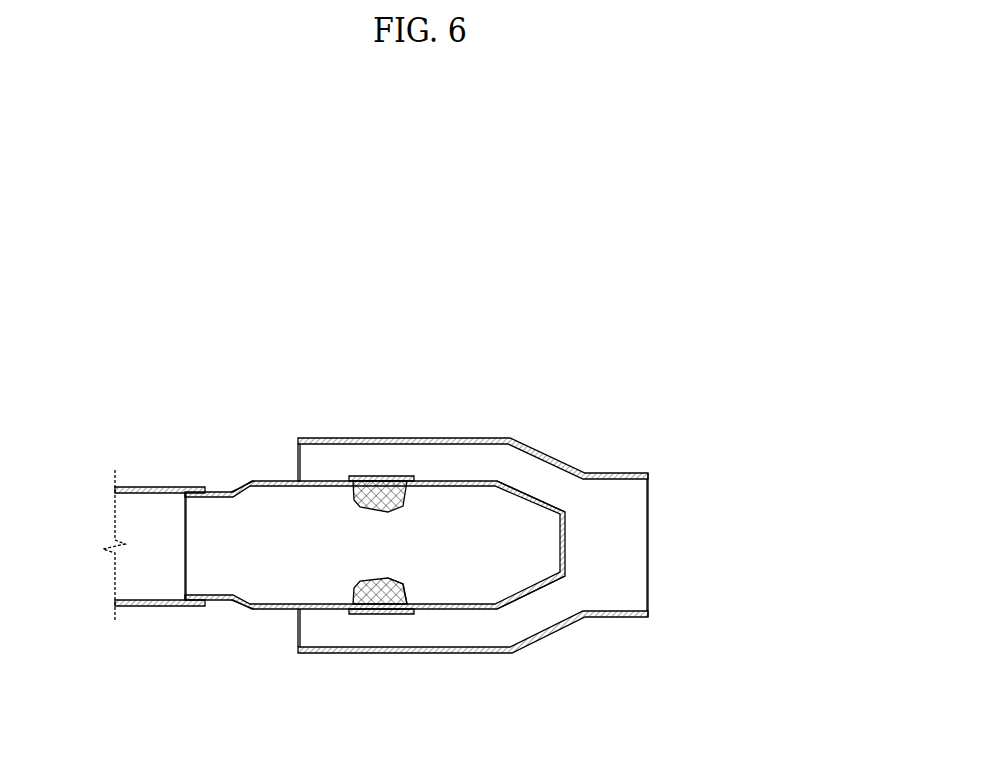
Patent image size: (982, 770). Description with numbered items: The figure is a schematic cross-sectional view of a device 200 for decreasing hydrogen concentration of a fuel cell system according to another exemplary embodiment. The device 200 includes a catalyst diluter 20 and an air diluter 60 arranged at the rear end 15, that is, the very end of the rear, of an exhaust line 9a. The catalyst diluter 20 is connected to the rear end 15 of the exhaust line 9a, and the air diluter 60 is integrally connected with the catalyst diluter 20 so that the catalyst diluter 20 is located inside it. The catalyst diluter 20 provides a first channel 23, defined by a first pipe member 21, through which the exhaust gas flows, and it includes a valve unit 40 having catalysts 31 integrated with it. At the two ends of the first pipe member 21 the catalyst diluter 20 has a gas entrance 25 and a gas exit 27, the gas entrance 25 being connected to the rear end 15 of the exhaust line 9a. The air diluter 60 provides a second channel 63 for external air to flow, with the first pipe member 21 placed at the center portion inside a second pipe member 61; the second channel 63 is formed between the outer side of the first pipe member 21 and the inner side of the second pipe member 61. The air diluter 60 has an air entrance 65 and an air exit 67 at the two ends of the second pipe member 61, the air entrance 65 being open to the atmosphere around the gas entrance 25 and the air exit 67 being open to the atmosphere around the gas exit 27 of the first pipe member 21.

The device for decreasing hydrogen concentration 200 is at (388, 352).
The exhaust line 9a is at (152, 604).
The rear end 15 is at (190, 607).
The first channel 23 is at (213, 513).
The first pipe member 21 is at (270, 613).
The gas entrance 25 is at (218, 485).
The gas exit 27 is at (550, 511).
The valve unit 40 is at (365, 615).
The catalyst 31 is at (406, 573).
The air diluter 60 is at (537, 642).
The second pipe member 61 is at (478, 654).
The air entrance 65 is at (299, 645).
The second channel 63 is at (328, 465).
The air exit 67 is at (648, 566).
The catalyst diluter 20 is at (353, 725).